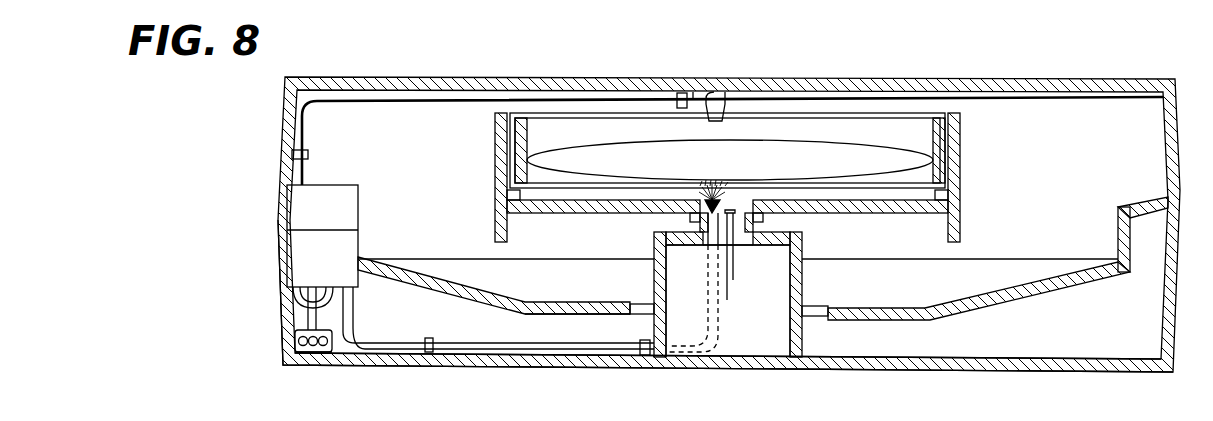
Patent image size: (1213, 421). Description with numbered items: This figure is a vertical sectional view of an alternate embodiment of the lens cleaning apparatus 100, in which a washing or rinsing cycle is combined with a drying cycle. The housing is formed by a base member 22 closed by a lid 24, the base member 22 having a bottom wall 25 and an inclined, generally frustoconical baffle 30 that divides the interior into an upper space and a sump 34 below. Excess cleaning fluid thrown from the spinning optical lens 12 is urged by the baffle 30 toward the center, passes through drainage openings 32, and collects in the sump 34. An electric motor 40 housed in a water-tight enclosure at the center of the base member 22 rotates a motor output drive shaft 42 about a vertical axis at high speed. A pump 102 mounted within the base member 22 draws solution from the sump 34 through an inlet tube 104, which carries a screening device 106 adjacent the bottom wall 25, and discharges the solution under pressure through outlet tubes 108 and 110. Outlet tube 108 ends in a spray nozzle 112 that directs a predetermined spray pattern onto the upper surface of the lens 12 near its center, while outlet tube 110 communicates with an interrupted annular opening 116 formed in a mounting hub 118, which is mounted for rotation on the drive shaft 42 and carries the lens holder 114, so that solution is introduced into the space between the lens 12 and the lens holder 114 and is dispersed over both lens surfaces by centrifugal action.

The apparatus 100 is at (356, 66).
The optical lens 12 is at (797, 162).
The base member 22 is at (280, 268).
The lid 24 is at (283, 118).
The bottom wall 25 is at (620, 367).
The baffle 30 is at (562, 318).
The drainage openings 32 is at (633, 300).
The sump 34 is at (1023, 349).
The electric motor 40 is at (752, 340).
The motor output drive shaft 42 is at (727, 262).
The pump 102 is at (302, 216).
The inlet tube 104 is at (302, 322).
The screening device 106 is at (318, 355).
The outlet tube 108 is at (293, 303).
The outlet tube 110 is at (352, 320).
The spray nozzle 112 is at (722, 110).
The lens holder 114 is at (963, 228).
The interrupted annular opening 116 is at (733, 250).
The mounting hub 118 is at (755, 228).